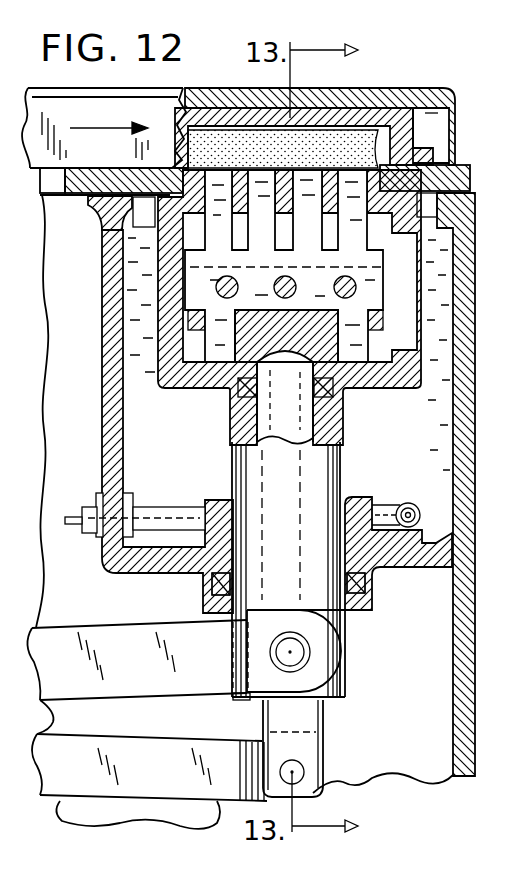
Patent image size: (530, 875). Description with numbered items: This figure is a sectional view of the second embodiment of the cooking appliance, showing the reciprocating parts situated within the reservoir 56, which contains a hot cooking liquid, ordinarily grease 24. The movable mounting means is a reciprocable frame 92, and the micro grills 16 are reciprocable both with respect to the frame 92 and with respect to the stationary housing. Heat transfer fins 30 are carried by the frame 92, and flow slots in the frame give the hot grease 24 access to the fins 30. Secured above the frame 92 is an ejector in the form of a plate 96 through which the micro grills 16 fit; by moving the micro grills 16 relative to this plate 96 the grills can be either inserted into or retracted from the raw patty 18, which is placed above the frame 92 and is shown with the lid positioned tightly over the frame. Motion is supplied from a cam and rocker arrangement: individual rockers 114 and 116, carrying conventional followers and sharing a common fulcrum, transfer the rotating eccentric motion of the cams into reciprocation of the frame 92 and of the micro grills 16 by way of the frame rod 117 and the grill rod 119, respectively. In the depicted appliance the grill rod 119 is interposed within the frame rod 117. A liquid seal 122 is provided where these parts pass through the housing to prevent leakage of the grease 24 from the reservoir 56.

The micro grills 16 is at (218, 180).
The raw patty 18 is at (352, 140).
The ejector plate 96 is at (408, 110).
The reciprocable frame 92 is at (193, 233).
The reservoir 56 is at (255, 468).
The grease 24 is at (143, 362).
The liquid seal 122 is at (240, 390).
The heat transfer fins 30 is at (353, 333).
The rocker 114 is at (63, 648).
The rocker 116 is at (143, 752).
The frame rod 117 is at (347, 643).
The grill rod 119 is at (315, 715).